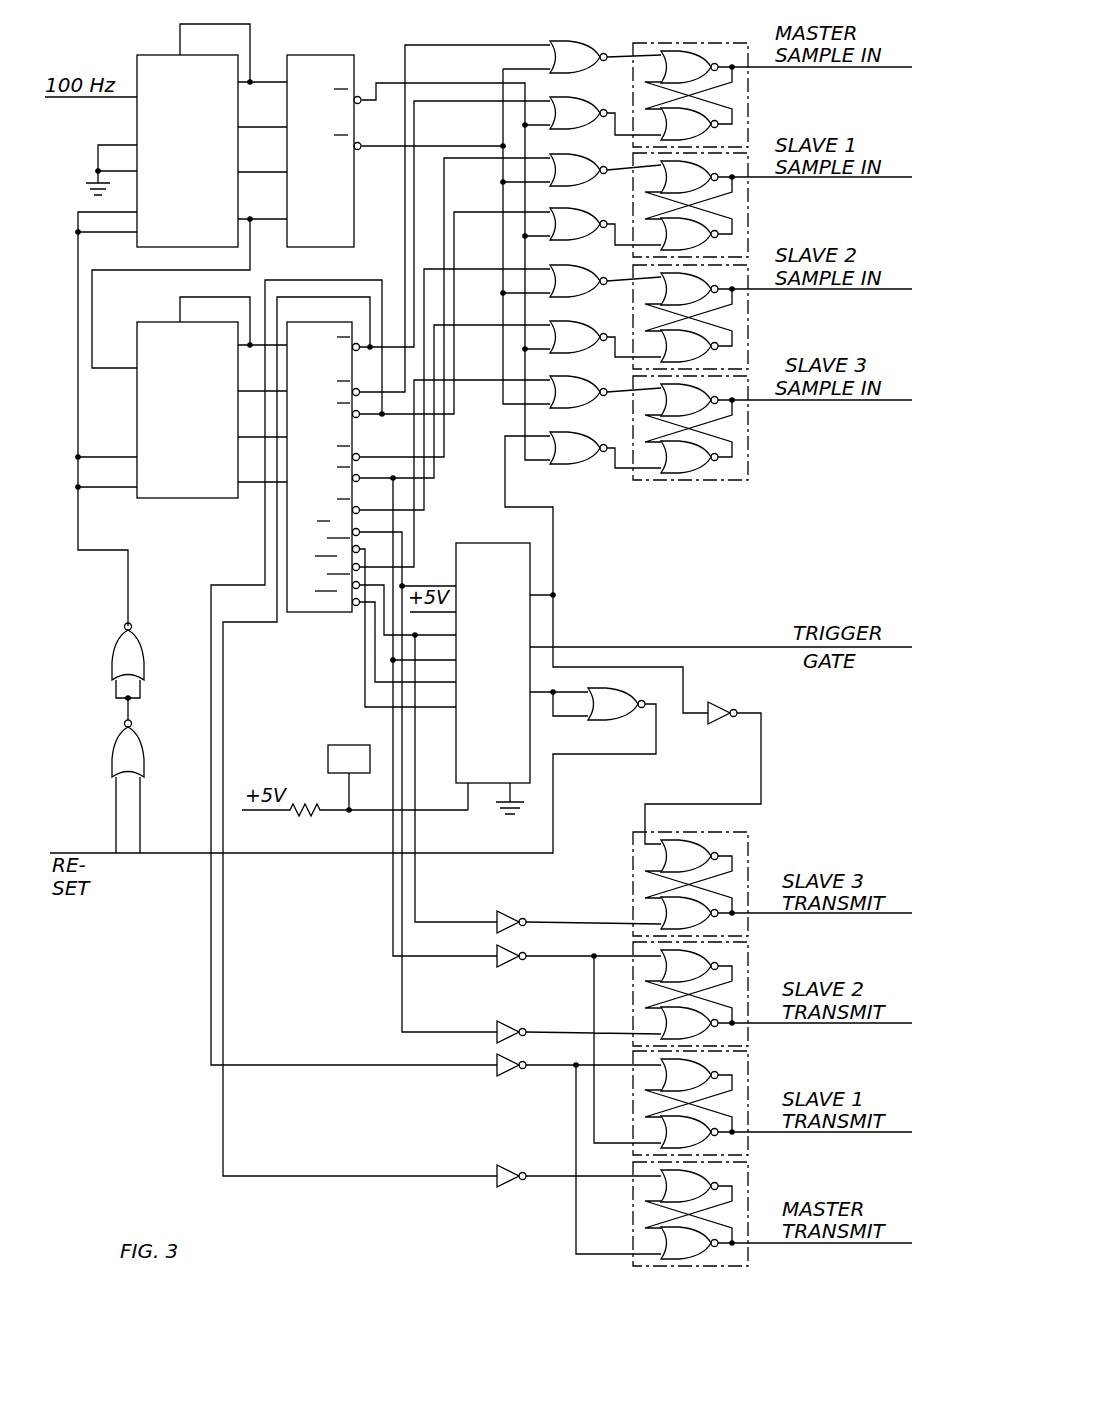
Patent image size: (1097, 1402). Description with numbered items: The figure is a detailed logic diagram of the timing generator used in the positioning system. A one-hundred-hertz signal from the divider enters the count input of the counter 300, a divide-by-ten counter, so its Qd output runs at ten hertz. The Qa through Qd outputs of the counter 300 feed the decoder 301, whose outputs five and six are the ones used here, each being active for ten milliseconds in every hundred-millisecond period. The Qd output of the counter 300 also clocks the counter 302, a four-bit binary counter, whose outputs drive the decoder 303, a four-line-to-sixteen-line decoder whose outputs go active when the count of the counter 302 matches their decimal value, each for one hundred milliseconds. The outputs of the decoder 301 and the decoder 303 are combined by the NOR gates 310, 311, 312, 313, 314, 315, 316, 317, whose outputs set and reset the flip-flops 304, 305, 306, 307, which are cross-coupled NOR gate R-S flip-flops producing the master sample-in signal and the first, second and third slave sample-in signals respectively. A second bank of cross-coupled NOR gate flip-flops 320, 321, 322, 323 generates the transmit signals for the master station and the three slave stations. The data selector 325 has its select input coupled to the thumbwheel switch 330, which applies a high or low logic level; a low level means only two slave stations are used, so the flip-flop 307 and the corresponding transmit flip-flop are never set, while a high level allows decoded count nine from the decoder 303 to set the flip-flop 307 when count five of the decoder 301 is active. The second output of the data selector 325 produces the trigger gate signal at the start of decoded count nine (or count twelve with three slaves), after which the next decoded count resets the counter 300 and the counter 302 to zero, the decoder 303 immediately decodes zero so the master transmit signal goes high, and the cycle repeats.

The counter 300 is at (150, 55).
The decoder 301 is at (300, 55).
The counter 302 is at (205, 498).
The decoder 303 is at (322, 612).
The flip-flop 304 is at (748, 100).
The flip-flop 305 is at (748, 215).
The flip-flop 306 is at (748, 326).
The flip-flop 307 is at (748, 440).
The NOR gate 310 is at (598, 33).
The NOR gate 311 is at (610, 95).
The NOR gate 312 is at (606, 153).
The NOR gate 313 is at (610, 211).
The NOR gate 314 is at (606, 268).
The NOR gate 315 is at (610, 323).
The NOR gate 316 is at (602, 378).
The NOR gate 317 is at (610, 433).
The flip-flop 320 is at (748, 848).
The flip-flop 321 is at (748, 958).
The flip-flop 322 is at (748, 1068).
The master transmit NOR latch 323 is at (748, 1178).
The data selector 325 is at (486, 543).
The thumbwheel switch 330 is at (328, 752).